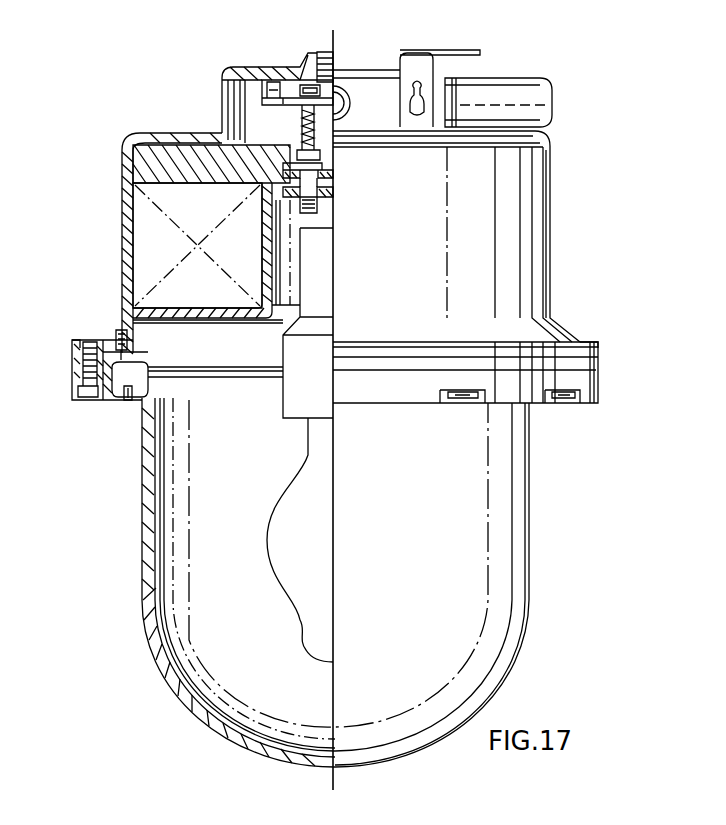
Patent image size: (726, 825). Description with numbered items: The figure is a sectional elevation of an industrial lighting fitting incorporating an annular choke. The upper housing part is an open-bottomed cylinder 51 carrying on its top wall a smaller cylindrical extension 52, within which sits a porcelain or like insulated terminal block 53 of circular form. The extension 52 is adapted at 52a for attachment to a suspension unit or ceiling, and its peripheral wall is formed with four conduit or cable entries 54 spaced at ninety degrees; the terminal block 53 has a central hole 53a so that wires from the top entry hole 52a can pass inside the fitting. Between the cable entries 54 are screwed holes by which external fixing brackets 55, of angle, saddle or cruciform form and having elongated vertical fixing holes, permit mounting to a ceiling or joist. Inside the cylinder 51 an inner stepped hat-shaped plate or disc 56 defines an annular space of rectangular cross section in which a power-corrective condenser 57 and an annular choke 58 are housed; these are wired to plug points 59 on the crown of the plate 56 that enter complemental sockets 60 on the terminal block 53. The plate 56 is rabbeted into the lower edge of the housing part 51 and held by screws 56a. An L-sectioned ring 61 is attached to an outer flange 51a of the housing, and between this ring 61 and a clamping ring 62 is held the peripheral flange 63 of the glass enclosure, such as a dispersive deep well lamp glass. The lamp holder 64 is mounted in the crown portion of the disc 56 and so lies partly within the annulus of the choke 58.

The open-bottomed cylinder 51 is at (548, 296).
The outer flange 51a is at (578, 342).
The cylindrical extension 52 is at (250, 70).
The attachment portion 52a is at (328, 54).
The insulated terminal block 53 is at (290, 106).
The central hole 53a is at (336, 96).
The conduit or cable entries 54 is at (357, 105).
The external fixing brackets 55 is at (398, 62).
The stepped hat-shaped plate 56 is at (264, 257).
The screws 56a is at (120, 330).
The power-corrective condenser 57 is at (150, 166).
The annular choke 58 is at (152, 240).
The plug points 59 is at (322, 155).
The sockets 60 is at (303, 132).
The L-sectioned ring 61 is at (598, 360).
The clamping ring 62 is at (100, 398).
The peripheral flange 63 is at (128, 400).
The lamp holder 64 is at (327, 268).